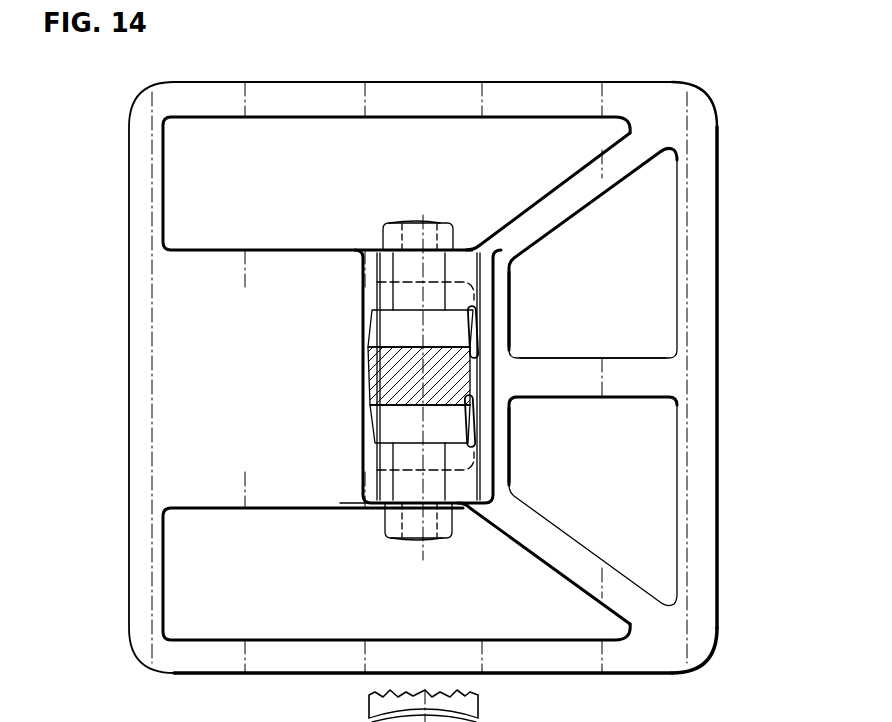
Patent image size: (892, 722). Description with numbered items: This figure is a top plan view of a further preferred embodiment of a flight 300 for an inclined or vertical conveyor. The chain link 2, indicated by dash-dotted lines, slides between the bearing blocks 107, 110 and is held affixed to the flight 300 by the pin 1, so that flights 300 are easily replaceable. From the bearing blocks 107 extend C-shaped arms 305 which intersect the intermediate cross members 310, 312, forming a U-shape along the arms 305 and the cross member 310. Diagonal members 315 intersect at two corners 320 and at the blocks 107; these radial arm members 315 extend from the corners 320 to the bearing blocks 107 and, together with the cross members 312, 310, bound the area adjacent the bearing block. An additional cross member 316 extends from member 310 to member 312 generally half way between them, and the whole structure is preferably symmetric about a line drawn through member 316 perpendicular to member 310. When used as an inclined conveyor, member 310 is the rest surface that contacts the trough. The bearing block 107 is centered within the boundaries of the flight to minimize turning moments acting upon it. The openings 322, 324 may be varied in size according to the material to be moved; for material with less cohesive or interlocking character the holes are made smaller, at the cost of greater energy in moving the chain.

The flight 300 is at (128, 104).
The corners 320 is at (712, 100).
The intermediate cross member 310 is at (718, 305).
The C-shaped arms 305 is at (356, 118).
The diagonal members 315 is at (545, 197).
The opening 324 is at (460, 194).
The opening 322 is at (622, 284).
The intermediate cross member 312 is at (504, 327).
The additional cross member 316 is at (627, 376).
The bearing block 110 is at (498, 425).
The chain link 2 is at (375, 338).
The bearing block 107 is at (376, 298).
The pin 1 is at (432, 538).